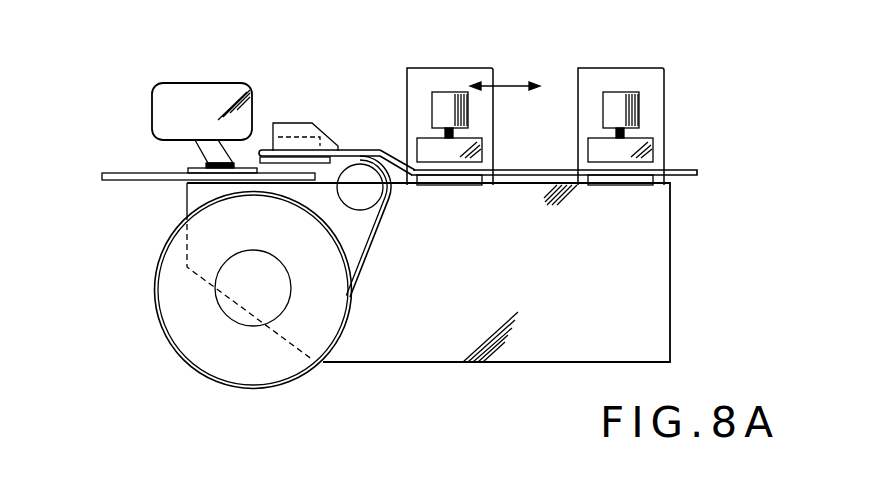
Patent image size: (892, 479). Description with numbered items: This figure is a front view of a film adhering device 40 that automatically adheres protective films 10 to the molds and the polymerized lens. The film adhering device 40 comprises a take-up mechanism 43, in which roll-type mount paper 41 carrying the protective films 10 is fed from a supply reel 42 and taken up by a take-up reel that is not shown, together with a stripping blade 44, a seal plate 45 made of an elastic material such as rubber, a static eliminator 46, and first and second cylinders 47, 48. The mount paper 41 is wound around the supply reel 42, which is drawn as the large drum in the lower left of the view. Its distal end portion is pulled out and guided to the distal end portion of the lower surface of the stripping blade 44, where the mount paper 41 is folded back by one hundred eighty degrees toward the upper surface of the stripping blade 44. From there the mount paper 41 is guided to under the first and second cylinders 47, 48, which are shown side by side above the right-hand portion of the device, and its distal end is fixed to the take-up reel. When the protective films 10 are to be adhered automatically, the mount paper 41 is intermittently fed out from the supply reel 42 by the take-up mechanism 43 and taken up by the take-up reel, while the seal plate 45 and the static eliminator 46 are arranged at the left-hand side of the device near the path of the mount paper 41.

The protective film 10 is at (193, 168).
The film adhering device 40 is at (564, 107).
The mount paper 41 is at (168, 340).
The supply reel 42 is at (233, 258).
The take-up mechanism 43 is at (396, 205).
The stripping blade 44 is at (297, 150).
The seal plate 45 is at (113, 172).
The static eliminator 46 is at (203, 82).
The first cylinder 47 is at (495, 125).
The second cylinder 48 is at (665, 98).